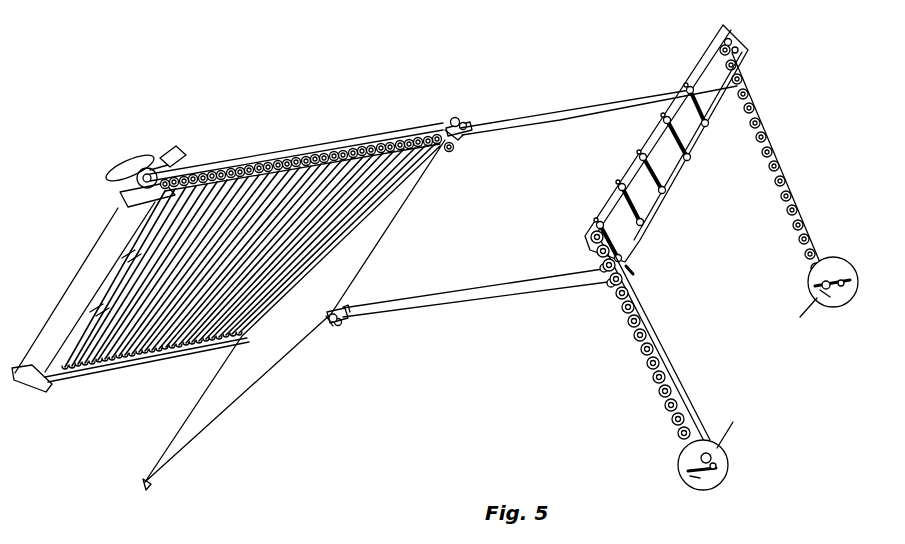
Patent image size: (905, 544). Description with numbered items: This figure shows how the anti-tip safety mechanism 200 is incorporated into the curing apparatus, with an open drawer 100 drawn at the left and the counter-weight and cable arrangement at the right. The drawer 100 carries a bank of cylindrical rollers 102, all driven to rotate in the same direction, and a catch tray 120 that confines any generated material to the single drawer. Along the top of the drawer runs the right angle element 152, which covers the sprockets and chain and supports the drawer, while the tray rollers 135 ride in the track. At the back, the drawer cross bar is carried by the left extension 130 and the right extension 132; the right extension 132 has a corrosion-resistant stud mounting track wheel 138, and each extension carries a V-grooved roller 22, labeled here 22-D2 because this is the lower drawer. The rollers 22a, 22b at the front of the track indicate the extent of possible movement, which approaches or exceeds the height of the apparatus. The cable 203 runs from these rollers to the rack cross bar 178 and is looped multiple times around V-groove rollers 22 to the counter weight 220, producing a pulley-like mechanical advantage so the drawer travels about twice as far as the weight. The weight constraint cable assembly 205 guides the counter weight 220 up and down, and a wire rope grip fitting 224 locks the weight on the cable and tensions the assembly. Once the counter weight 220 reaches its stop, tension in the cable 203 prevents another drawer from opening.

The drawer 100 is at (238, 140).
The cylindrical rollers 102 is at (283, 248).
The catch tray 120 is at (309, 328).
The left extension 130 is at (345, 306).
The right extension 132 is at (459, 141).
The tray rollers 135 is at (316, 156).
The stud mounting track wheel 138 is at (452, 126).
The right angle element 152 is at (358, 139).
The rack cross bar 178 is at (620, 177).
The anti-tip safety mechanism 200 is at (544, 71).
The cable 203 is at (550, 127).
The weight constraint cable assembly 205 is at (684, 378).
The counter weight 220 is at (658, 219).
The wire rope grip fitting 224 is at (634, 271).
The V-grooved roller 22 is at (611, 229).
The roller at front of track 22a is at (336, 328).
The roller at front of track 22b is at (449, 152).
The V-grooved roller of drawer two 22-D2 is at (456, 125).